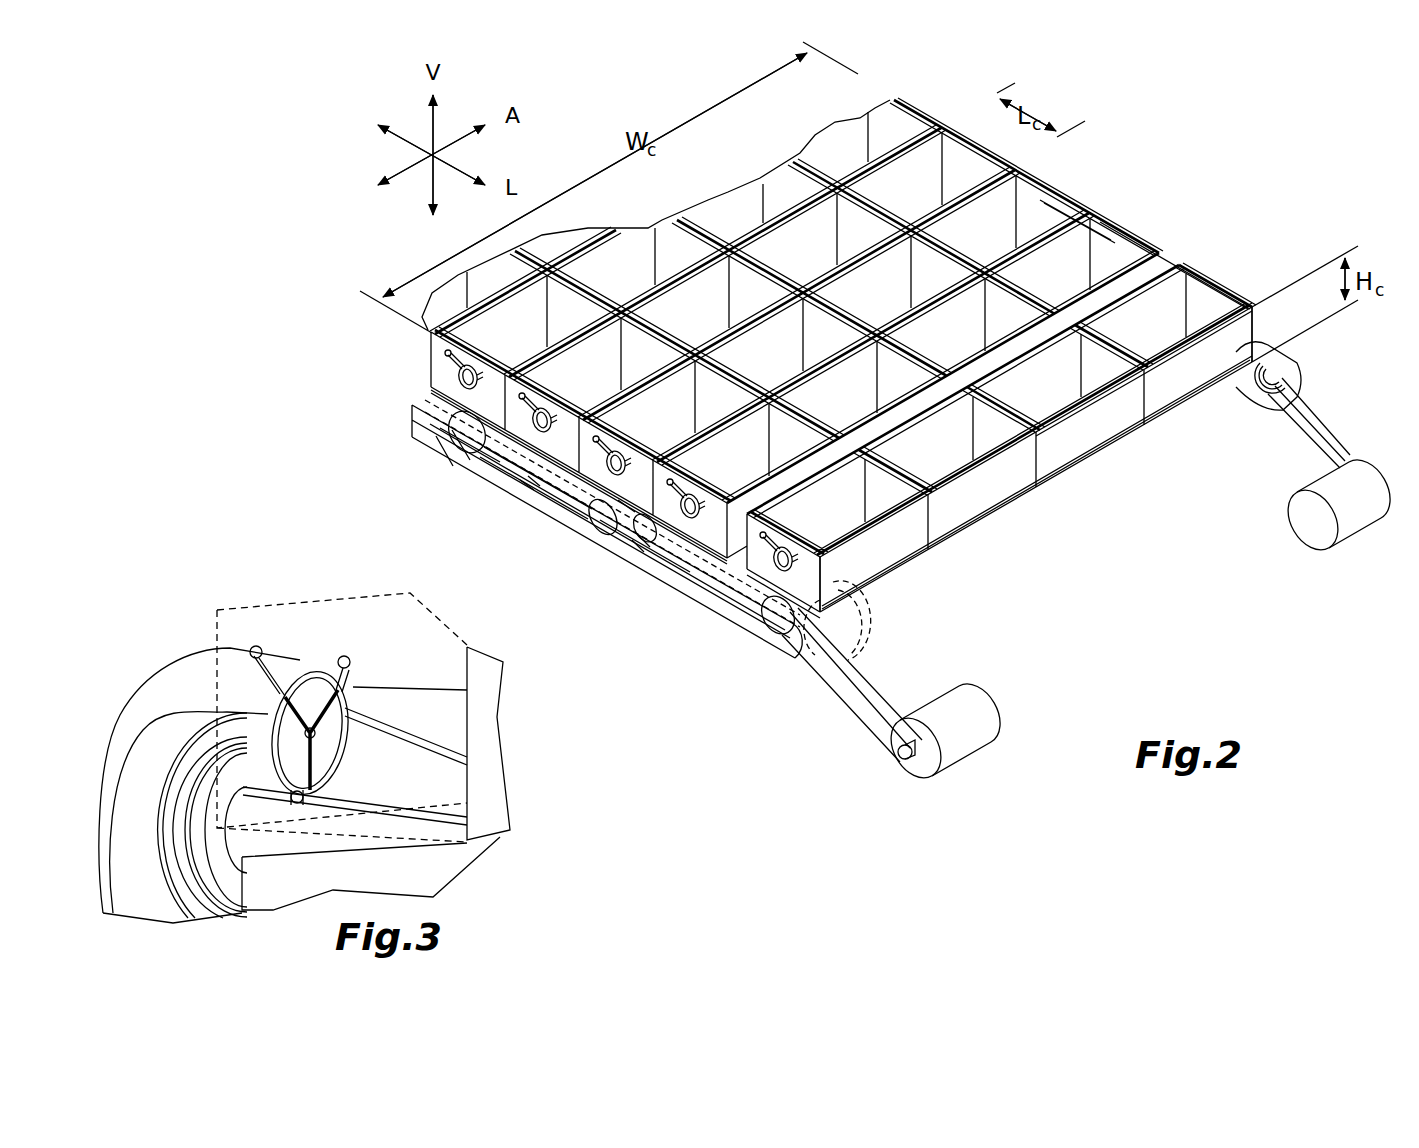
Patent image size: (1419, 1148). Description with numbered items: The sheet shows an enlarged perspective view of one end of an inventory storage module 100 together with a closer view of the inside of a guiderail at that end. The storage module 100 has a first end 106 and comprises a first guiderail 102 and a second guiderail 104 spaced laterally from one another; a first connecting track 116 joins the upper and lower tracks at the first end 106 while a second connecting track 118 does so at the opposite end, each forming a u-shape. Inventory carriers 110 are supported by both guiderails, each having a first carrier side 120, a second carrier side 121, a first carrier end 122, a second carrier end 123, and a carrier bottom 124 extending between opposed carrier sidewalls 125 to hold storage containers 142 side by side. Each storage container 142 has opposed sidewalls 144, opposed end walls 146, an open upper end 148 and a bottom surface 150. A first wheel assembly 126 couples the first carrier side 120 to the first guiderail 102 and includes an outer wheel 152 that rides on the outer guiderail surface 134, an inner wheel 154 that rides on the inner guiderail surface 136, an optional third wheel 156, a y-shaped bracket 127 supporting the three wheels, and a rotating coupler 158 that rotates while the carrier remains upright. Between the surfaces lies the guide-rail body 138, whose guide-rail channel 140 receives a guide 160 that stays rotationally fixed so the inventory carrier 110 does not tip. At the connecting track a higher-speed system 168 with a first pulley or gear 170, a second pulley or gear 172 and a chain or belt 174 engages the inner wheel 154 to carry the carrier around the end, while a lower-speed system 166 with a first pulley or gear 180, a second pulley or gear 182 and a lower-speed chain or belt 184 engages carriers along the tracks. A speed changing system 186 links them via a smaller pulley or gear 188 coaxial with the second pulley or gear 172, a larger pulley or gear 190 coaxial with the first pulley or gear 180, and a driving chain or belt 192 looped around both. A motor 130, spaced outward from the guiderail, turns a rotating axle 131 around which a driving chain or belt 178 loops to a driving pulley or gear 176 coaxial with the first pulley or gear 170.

In FIG. 2, the inventory storage module 100 is at (1190, 152).
In FIG. 2, the first guiderail 102 is at (866, 572).
In FIG. 3, the first guiderail 102 is at (327, 776).
In FIG. 2, the second guiderail 104 is at (1272, 402).
In FIG. 2, the first end 106 is at (1340, 238).
In FIG. 2, the inventory carrier 110 is at (975, 527).
In FIG. 2, the first connecting track 116 is at (843, 625).
In FIG. 2, the second connecting track 118 is at (1290, 378).
In FIG. 2, the first carrier side 120 is at (807, 583).
In FIG. 2, the second carrier side 121 is at (1216, 282).
In FIG. 2, the first carrier end 122 is at (1262, 345).
In FIG. 2, the second carrier end 123 is at (1160, 258).
In FIG. 2, the carrier bottom 124 is at (995, 512).
In FIG. 2, the carrier sidewalls 125 is at (579, 475).
In FIG. 2, the first wheel assembly 126 is at (452, 372).
In FIG. 3, the first wheel assembly 126 is at (329, 747).
In FIG. 3, the y-shaped bracket 127 is at (457, 693).
In FIG. 2, the motor 130 is at (960, 742).
In FIG. 2, the rotating axle 131 is at (900, 760).
In FIG. 3, the outer guiderail surface 134 is at (148, 687).
In FIG. 3, the inner guiderail surface 136 is at (443, 817).
In FIG. 3, the guide-rail body 138 is at (148, 743).
In FIG. 3, the guide-rail channel 140 is at (460, 757).
In FIG. 2, the storage container 142 is at (1200, 368).
In FIG. 2, the sidewalls 144 is at (1033, 218).
In FIG. 2, the end walls 146 is at (1108, 270).
In FIG. 2, the upper end 148 is at (1066, 440).
In FIG. 2, the bottom surface 150 is at (1100, 423).
In FIG. 3, the outer wheel 152 is at (253, 647).
In FIG. 3, the inner wheel 154 is at (294, 808).
In FIG. 3, the third wheel 156 is at (347, 656).
In FIG. 3, the rotating coupler 158 is at (356, 680).
In FIG. 3, the guide 160 is at (467, 778).
In FIG. 2, the lower-speed system 166 is at (495, 454).
In FIG. 2, the higher-speed system 168 is at (748, 640).
In FIG. 2, the first pulley or gear 170 is at (775, 625).
In FIG. 2, the second pulley or gear 172 is at (667, 583).
In FIG. 2, the chain or belt 174 is at (716, 588).
In FIG. 2, the driving pulley or gear 176 is at (788, 640).
In FIG. 2, the driving chain or belt 178 is at (857, 700).
In FIG. 2, the first pulley or gear 180 is at (592, 512).
In FIG. 2, the second pulley or gear 182 is at (447, 440).
In FIG. 2, the lower-speed chain or belt 184 is at (527, 485).
In FIG. 2, the speed changing system 186 is at (640, 550).
In FIG. 2, the smaller pulley or gear 188 is at (648, 545).
In FIG. 2, the larger pulley or gear 190 is at (592, 530).
In FIG. 2, the driving chain or belt 192 is at (623, 503).